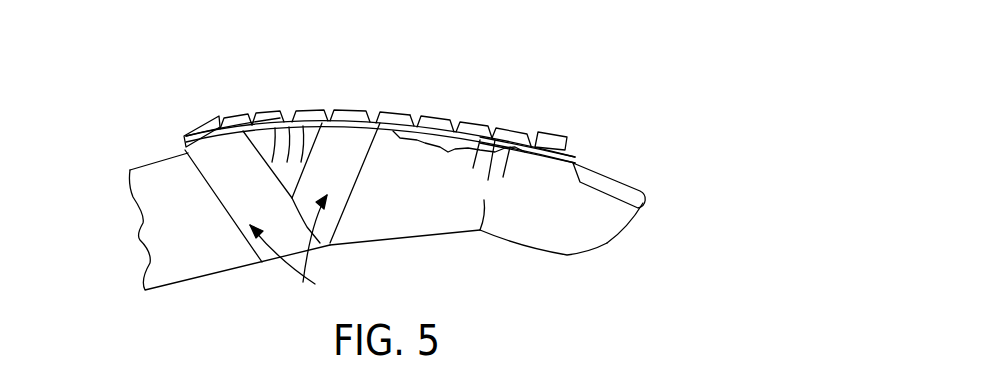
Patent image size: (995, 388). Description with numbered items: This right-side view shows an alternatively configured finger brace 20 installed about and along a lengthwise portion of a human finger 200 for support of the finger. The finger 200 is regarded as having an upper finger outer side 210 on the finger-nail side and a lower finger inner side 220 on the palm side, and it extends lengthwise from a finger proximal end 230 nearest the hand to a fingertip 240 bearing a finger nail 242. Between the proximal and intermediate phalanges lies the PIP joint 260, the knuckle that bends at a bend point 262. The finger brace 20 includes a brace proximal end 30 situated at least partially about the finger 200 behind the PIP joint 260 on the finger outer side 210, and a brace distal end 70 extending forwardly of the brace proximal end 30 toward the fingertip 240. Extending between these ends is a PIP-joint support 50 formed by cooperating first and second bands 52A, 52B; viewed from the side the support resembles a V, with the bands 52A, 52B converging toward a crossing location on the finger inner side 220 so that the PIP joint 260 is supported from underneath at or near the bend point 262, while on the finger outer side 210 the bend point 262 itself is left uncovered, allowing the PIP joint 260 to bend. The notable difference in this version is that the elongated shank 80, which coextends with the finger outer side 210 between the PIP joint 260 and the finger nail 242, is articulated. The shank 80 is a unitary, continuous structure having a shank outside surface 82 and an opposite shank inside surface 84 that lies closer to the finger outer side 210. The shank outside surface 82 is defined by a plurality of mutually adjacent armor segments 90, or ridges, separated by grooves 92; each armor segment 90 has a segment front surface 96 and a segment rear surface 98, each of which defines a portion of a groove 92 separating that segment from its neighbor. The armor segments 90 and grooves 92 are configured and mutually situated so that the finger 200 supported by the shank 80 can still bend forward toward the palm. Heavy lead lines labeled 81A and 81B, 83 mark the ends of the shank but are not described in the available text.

The finger brace 20 is at (358, 84).
The brace proximal end 30 is at (188, 158).
The PIP-joint support 50 is at (299, 246).
The first band 52A is at (263, 197).
The second band 52B is at (356, 174).
The brace distal end 70 is at (459, 160).
The elongated shank 80 is at (393, 107).
The first end of strip 81A is at (183, 142).
The second end of strip 81B is at (567, 137).
The shank outside surface 82 is at (412, 117).
The strip end portion 83 is at (610, 124).
The shank inside surface 84 is at (538, 147).
The armor segment 90 is at (437, 110).
The groove 92 is at (457, 120).
The segment front surface 96 is at (247, 118).
The segment rear surface 98 is at (215, 128).
The human finger 200 is at (417, 210).
The finger outer side 210 is at (573, 158).
The finger inner side 220 is at (543, 253).
The finger proximal end 230 is at (197, 248).
The fingertip 240 is at (603, 230).
The finger nail 242 is at (617, 188).
The PIP joint 260 is at (252, 115).
The bend point 262 is at (275, 128).